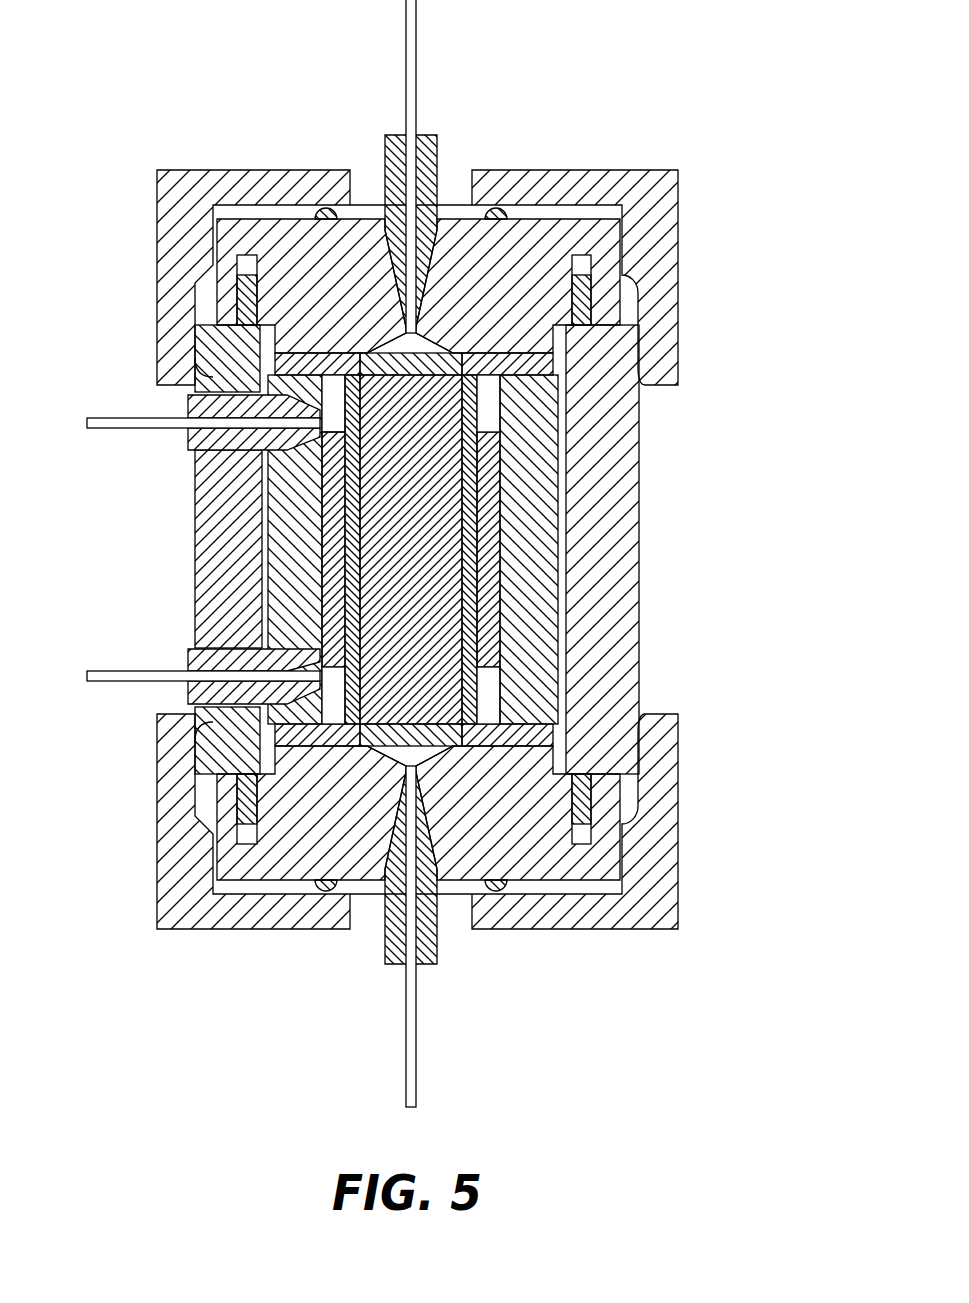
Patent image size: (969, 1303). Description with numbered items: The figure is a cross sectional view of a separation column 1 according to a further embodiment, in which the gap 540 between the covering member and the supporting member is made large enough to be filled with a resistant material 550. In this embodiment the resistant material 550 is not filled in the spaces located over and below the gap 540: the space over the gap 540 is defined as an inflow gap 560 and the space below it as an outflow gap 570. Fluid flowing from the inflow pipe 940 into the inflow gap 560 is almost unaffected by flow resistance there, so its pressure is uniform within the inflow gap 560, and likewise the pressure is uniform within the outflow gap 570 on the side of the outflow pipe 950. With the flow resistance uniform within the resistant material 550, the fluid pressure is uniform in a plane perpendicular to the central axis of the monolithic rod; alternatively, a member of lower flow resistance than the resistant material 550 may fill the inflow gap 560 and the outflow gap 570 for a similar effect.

The pressure cell assembly 1 is at (750, 918).
The gap 540 is at (320, 570).
The resistant material 550 is at (333, 507).
The inflow gap 560 is at (487, 413).
The outflow gap 570 is at (490, 688).
The inflow pipe 940 is at (117, 417).
The outflow pipe 950 is at (113, 681).